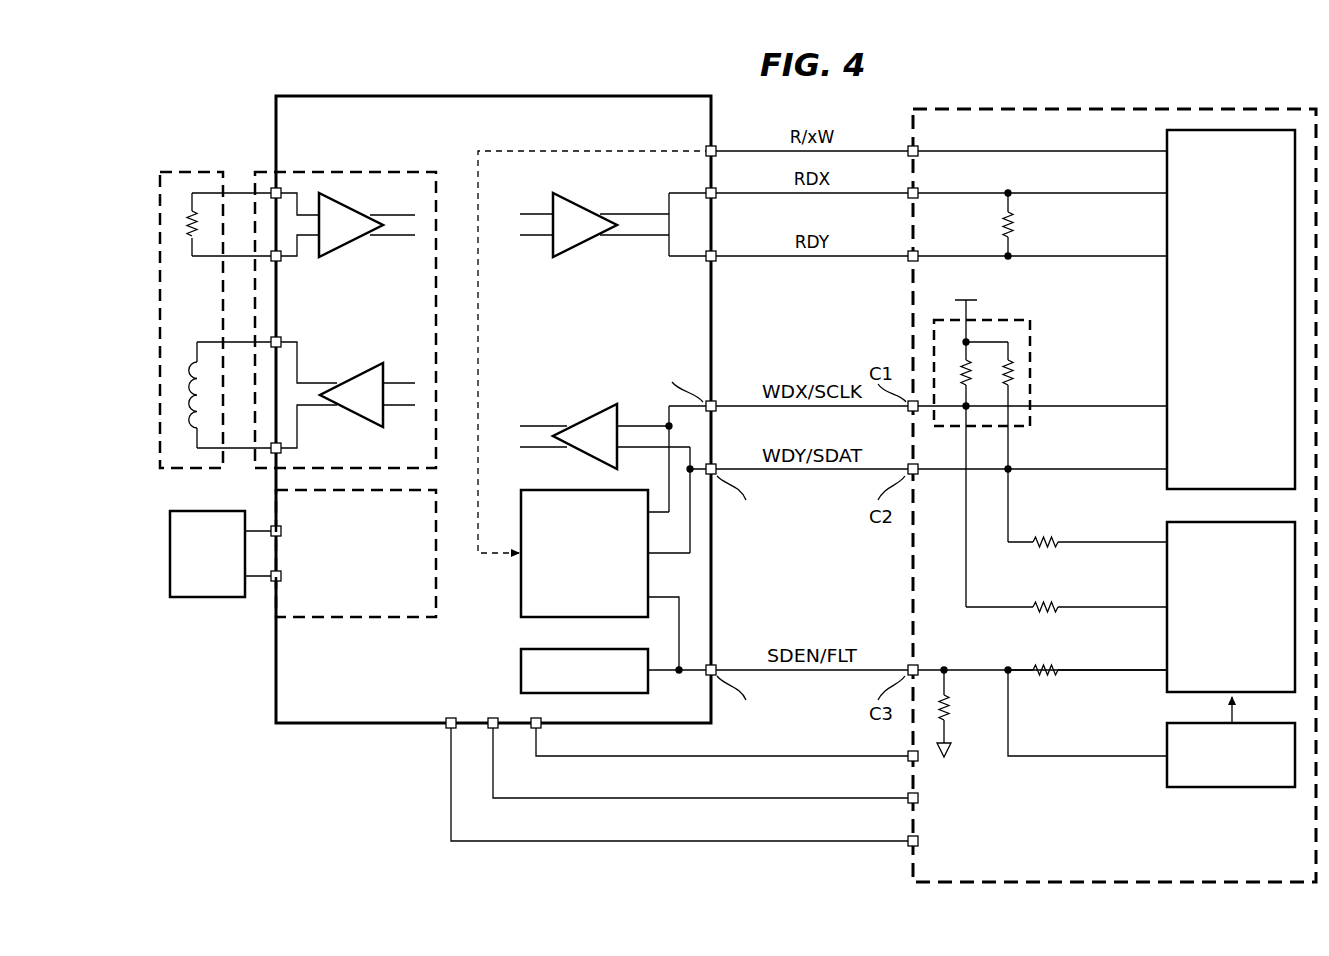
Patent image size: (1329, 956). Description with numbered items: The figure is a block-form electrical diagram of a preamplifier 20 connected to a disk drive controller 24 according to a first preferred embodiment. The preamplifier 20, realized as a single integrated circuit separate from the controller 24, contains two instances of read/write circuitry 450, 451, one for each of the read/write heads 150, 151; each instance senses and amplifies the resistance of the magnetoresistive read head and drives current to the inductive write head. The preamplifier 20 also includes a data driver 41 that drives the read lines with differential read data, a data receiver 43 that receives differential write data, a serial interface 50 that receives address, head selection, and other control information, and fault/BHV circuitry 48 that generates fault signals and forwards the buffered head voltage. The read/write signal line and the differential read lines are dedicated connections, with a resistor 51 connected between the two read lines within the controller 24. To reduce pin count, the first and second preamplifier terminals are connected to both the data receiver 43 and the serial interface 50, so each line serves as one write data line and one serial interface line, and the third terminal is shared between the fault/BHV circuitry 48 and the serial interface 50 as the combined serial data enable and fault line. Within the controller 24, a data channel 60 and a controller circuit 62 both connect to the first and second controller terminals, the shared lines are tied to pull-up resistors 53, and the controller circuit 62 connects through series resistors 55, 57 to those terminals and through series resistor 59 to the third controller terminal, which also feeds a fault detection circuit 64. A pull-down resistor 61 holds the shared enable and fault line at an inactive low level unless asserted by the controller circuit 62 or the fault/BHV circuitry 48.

The preamplifier 20 is at (492, 95).
The controller 24 is at (1116, 107).
The read/write head 150 is at (183, 171).
The read/write head 151 is at (170, 555).
The read/write circuitry 450 is at (358, 170).
The read/write circuitry 451 is at (357, 619).
The data driver 41 is at (577, 203).
The data receiver 43 is at (600, 419).
The fault/BHV circuitry 48 is at (521, 677).
The serial interface 50 is at (572, 596).
The resistor 51 is at (1013, 228).
The pull-up resistors 53 is at (997, 319).
The series resistor 55 is at (1046, 612).
The series resistor 57 is at (1045, 538).
The series resistor 59 is at (1045, 675).
The data channel 60 is at (1218, 351).
The pull-down resistor 61 is at (949, 714).
The controller circuit 62 is at (1218, 644).
The fault detection circuit 64 is at (1235, 789).